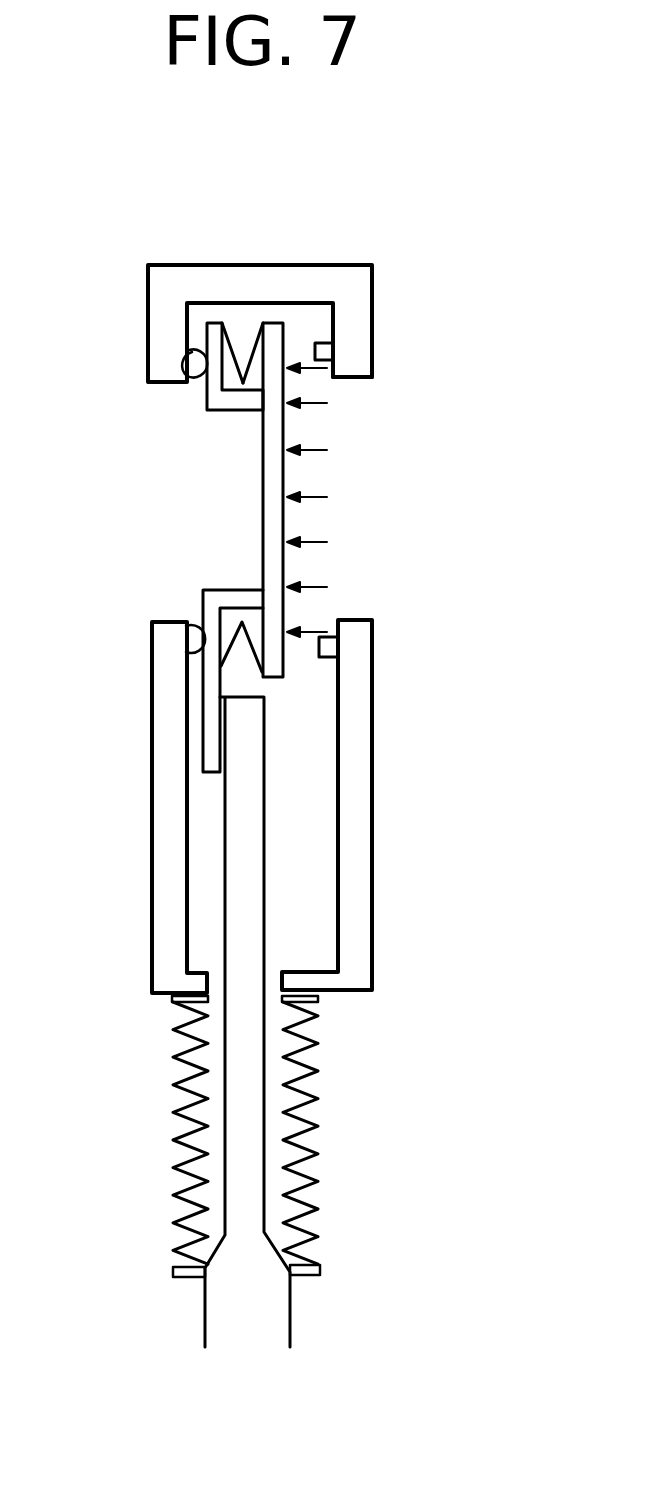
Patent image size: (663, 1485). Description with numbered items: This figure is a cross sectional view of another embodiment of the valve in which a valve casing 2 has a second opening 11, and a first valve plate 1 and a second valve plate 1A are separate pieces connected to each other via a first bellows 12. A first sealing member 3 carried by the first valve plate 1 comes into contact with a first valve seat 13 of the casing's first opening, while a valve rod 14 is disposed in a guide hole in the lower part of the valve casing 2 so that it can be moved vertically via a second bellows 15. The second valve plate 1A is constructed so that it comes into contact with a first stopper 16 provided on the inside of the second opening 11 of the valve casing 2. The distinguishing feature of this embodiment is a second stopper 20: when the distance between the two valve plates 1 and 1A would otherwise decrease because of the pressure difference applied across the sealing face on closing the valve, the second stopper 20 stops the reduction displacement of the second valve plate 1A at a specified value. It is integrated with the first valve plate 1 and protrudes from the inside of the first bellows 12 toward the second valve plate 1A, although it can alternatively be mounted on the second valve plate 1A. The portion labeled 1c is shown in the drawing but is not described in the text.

The first valve plate 1 is at (217, 382).
The second valve plate 1A is at (263, 528).
The lower clip member 1c is at (228, 588).
The valve casing 2 is at (360, 295).
The first sealing member 3 is at (195, 381).
The second opening 11 is at (350, 380).
The first bellows 12 is at (250, 335).
The first valve seat 13 is at (187, 358).
The valve rod 14 is at (242, 865).
The second bellows 15 is at (177, 1170).
The first stopper 16 is at (322, 343).
The second stopper 20 is at (243, 377).